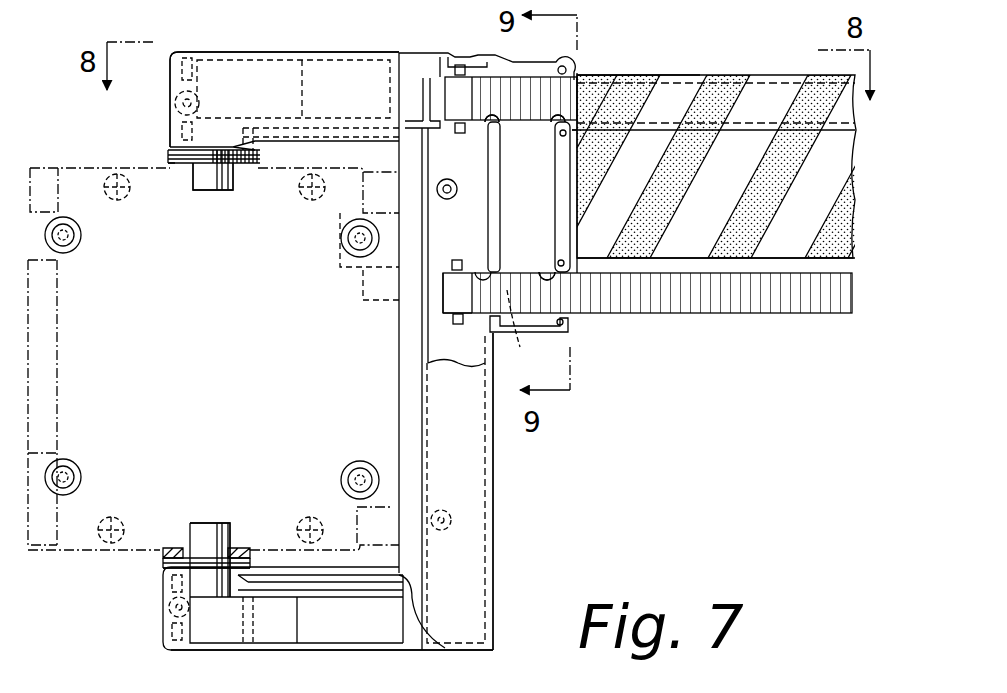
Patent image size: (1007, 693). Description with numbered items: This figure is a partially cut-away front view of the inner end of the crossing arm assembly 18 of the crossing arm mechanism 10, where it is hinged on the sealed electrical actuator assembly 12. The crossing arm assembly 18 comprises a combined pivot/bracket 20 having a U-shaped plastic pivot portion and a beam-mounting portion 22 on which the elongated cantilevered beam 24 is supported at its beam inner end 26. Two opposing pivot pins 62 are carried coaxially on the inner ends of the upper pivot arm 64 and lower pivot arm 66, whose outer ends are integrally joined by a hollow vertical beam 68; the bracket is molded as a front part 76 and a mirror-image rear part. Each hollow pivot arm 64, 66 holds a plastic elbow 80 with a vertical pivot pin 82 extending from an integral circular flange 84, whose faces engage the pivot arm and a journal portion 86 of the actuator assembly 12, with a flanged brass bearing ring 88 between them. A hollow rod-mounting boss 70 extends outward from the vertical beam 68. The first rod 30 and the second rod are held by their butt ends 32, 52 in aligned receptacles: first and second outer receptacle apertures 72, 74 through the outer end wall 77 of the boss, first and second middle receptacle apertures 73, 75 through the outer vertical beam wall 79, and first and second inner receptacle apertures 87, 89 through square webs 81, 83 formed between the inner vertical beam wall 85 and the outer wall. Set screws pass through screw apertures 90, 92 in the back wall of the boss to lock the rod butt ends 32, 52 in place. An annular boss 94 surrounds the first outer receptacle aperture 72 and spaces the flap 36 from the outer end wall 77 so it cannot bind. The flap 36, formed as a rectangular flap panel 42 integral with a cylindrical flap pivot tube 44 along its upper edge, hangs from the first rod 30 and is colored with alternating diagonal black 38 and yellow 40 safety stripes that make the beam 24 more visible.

The crossing arm mechanism 10 is at (252, 52).
The sealed electrical actuator assembly 12 is at (97, 347).
The crossing arm assembly 18 is at (343, 51).
The combined pivot/bracket 20 is at (496, 507).
The beam-mounting portion 22 is at (447, 208).
The elongated cantilevered beam 24 is at (686, 62).
The beam inner end 26 is at (605, 75).
The first elongated rod 30 is at (541, 82).
The rod butt end 32 is at (321, 120).
The elongated flap 36 is at (700, 266).
The black safety stripes 38 is at (603, 113).
The yellow safety stripes 40 is at (600, 194).
The rectangular flap panel 42 is at (683, 251).
The cylindrical flap pivot tube 44 is at (695, 86).
The butt end of second rod 52 is at (450, 321).
The pivot pins 62 is at (215, 193).
The upper hollow pivot arm 64 is at (248, 83).
The lower hollow pivot arm 66 is at (350, 652).
The hollow vertical beam 68 is at (494, 456).
The rod-mounting boss portion 70 is at (540, 179).
The first outer receptacle aperture 72 is at (556, 121).
The first middle receptacle aperture 73 is at (487, 124).
The second outer receptacle aperture 74 is at (547, 277).
The second middle receptacle aperture 75 is at (480, 277).
The front molded part 76 is at (467, 571).
The outer end wall 77 is at (560, 200).
The outer vertical beam wall 79 is at (487, 169).
The plastic elbow 80 is at (213, 73).
The first square web 81 is at (453, 130).
The vertical pivot pin 82 is at (200, 186).
The second square web 83 is at (452, 333).
The circular flange 84 is at (167, 150).
The inner vertical beam wall 85 is at (447, 303).
The journal portion 86 is at (168, 158).
The first inner receptacle aperture 87 is at (452, 76).
The flanged brass bearing ring 88 is at (170, 165).
The second inner receptacle aperture 89 is at (462, 321).
The first screw aperture 90 is at (518, 92).
The second screw aperture 92 is at (529, 327).
The annular boss 94 is at (575, 64).